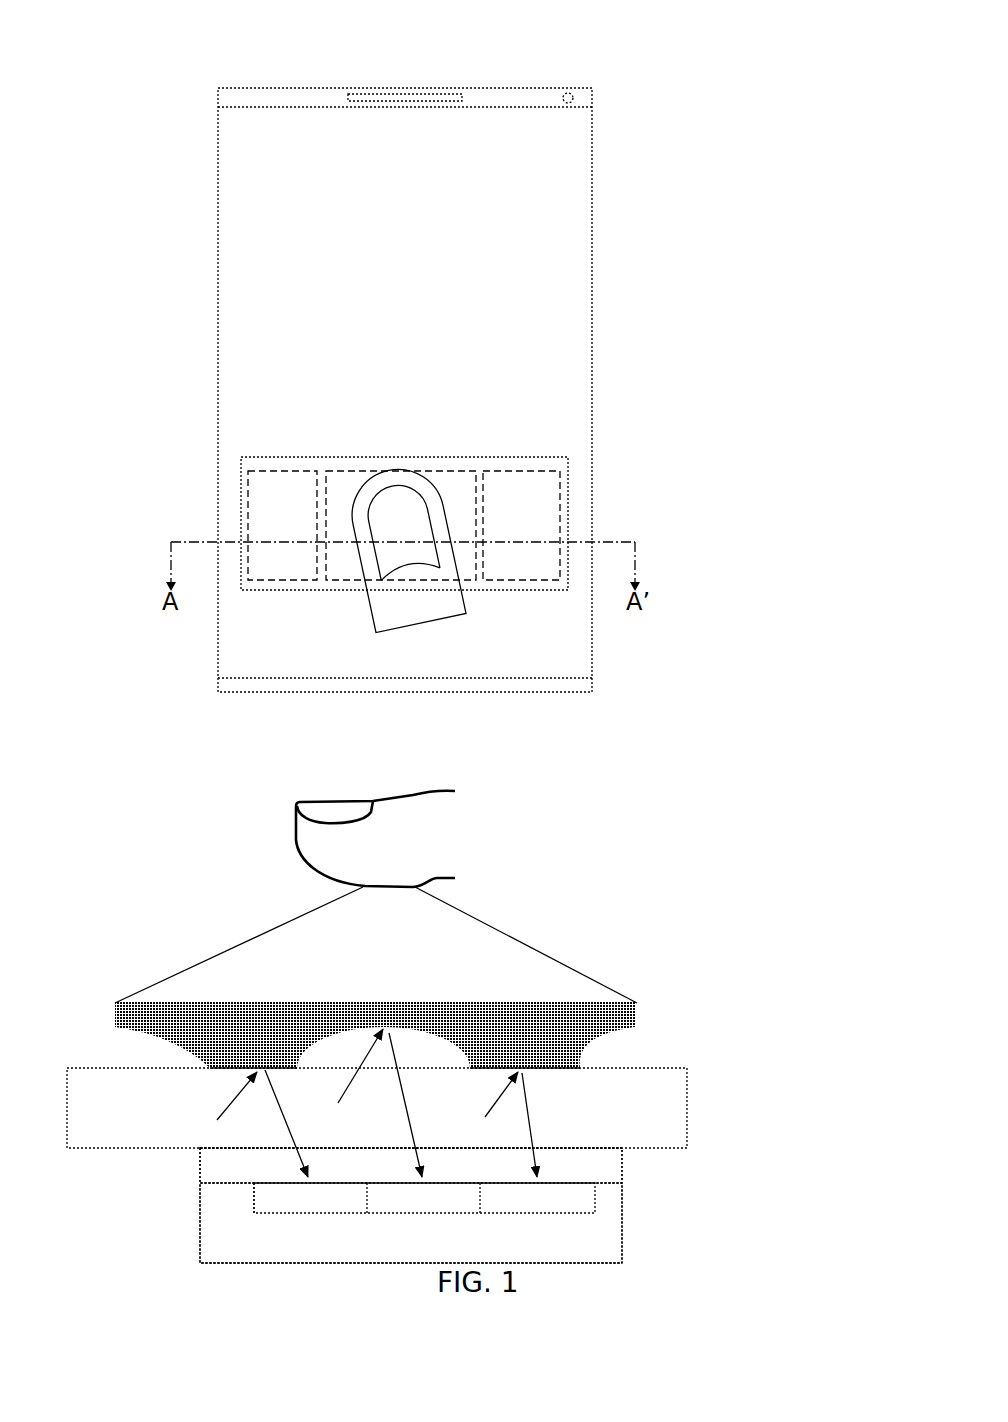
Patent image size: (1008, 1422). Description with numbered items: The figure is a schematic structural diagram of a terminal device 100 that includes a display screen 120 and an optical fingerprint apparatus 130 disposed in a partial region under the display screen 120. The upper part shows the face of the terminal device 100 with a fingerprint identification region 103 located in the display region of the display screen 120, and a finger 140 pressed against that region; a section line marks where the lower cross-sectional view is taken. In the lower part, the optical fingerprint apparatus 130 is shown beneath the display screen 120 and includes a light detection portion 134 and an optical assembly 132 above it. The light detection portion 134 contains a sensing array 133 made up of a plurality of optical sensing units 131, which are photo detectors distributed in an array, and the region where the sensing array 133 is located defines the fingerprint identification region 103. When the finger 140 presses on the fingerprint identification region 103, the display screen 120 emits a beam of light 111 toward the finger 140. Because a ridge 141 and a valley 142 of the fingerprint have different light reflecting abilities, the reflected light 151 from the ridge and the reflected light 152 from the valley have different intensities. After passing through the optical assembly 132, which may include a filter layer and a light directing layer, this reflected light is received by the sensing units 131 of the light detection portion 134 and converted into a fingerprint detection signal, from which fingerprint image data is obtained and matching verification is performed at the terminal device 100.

The terminal device 100 is at (411, 50).
The display screen 120 is at (572, 372).
The fingerprint identification region 103 is at (568, 473).
The finger 140 is at (429, 602).
The valley 142 is at (375, 1022).
The ridge 141 is at (395, 1051).
The light 111 is at (347, 1082).
The reflected light from the ridge 151 is at (422, 1123).
The reflected light from the valley 152 is at (419, 1105).
The optical fingerprint apparatus 130 is at (787, 1139).
The optical assembly 132 is at (622, 1166).
The light detection portion 134 is at (622, 1222).
The optical sensing units 131 is at (424, 1198).
The sensing array 133 is at (252, 1190).